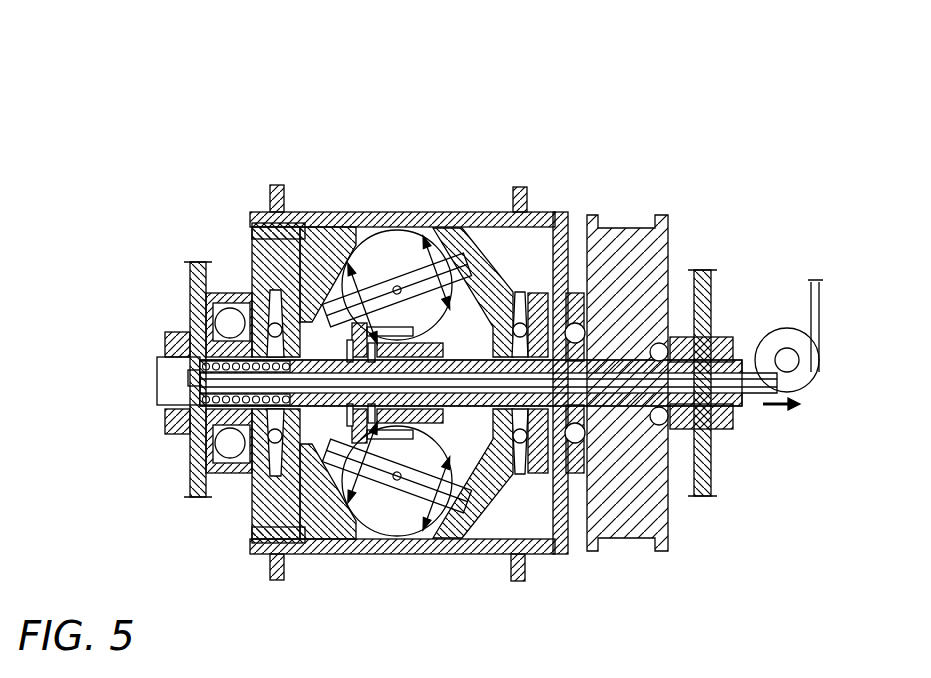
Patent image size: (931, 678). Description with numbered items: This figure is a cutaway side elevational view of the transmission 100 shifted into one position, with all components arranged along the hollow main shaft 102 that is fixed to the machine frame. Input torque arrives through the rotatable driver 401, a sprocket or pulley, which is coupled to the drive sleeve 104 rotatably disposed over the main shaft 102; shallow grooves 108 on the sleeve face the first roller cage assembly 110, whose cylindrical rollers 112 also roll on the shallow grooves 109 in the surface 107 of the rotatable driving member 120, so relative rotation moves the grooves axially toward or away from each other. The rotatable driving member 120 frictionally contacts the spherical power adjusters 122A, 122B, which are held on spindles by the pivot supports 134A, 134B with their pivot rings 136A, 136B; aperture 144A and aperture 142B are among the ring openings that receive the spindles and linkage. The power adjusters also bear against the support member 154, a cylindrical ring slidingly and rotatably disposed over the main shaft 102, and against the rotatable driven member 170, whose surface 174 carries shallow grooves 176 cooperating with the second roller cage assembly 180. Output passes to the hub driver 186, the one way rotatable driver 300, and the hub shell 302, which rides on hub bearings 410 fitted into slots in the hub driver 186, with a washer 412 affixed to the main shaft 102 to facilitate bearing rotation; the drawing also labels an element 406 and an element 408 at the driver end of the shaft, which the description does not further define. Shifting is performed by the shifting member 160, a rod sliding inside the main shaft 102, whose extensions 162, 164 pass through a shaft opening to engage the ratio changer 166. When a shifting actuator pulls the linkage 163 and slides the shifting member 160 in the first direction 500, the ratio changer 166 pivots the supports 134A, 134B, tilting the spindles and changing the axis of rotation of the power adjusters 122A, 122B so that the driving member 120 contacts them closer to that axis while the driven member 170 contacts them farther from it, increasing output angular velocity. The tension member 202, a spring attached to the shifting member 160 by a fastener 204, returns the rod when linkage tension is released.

The transmission 100 is at (341, 92).
The main shaft 102 is at (165, 355).
The drive sleeve 104 is at (652, 551).
The surface 107 is at (522, 290).
The shallow grooves 108 is at (268, 543).
The shallow grooves 109 is at (578, 292).
The first roller cage assembly 110 is at (570, 475).
The cylindrical rollers 112 is at (584, 330).
The rotatable driving member 120 is at (484, 212).
The spherical power adjuster 122A is at (420, 247).
The spherical power adjuster 122B is at (390, 545).
The pivot support 134A is at (335, 300).
The pivot support 134B is at (350, 470).
The pivot ring 136A is at (378, 250).
The pivot ring 136B is at (430, 535).
The aperture 142B is at (400, 425).
The aperture 144A is at (447, 262).
The support member 154 is at (525, 470).
The shifting member 160 is at (215, 445).
The extension 162 is at (256, 295).
The linkage 163 is at (819, 322).
The extension 164 is at (262, 262).
The ratio changer 166 is at (355, 522).
The rotatable driven member 170 is at (330, 240).
The surface 174 is at (290, 556).
The shallow grooves 176 is at (255, 530).
The second roller cage assembly 180 is at (255, 500).
The hub driver 186 is at (210, 325).
The tension member 202 is at (175, 410).
The fastener 204 is at (190, 378).
The one way rotatable driver 300 is at (257, 212).
The hub shell 302 is at (400, 230).
The rotatable driver 401 is at (635, 215).
The flange 406 is at (711, 480).
The mounting block 408 is at (668, 545).
The hub bearings 410 is at (197, 300).
The washer 412 is at (205, 460).
The first direction 500 is at (775, 410).